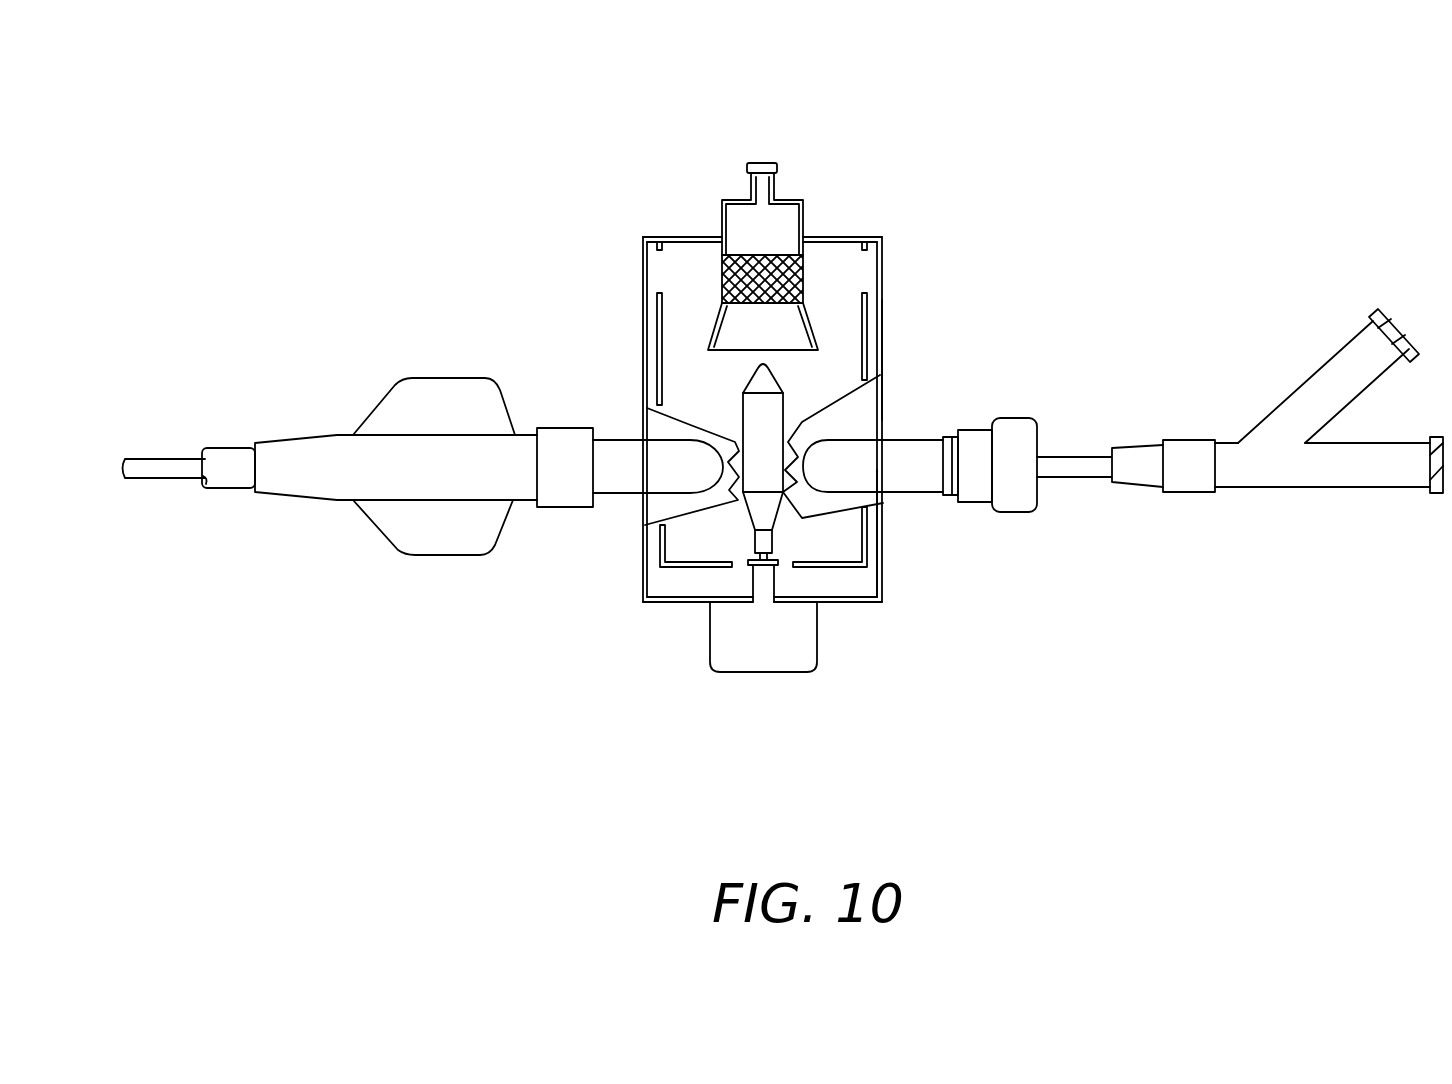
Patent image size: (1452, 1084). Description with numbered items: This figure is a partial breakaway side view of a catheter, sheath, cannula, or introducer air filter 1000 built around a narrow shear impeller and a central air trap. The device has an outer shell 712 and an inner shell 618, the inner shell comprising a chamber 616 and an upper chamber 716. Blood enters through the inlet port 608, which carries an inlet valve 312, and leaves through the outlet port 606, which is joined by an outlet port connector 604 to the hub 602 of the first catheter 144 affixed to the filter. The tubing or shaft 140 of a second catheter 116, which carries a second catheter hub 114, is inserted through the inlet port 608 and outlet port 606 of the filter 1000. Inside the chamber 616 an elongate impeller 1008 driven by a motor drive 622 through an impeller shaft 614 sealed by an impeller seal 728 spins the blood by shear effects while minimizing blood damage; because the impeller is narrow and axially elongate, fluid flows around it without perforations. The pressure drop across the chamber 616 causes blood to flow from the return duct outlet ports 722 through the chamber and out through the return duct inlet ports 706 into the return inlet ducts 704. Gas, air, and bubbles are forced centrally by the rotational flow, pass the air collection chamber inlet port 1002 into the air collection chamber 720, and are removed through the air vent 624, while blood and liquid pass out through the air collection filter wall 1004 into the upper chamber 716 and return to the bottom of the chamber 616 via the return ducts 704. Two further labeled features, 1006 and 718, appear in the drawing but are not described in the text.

The air filter 1000 is at (489, 214).
The air collection chamber inlet port 1002 is at (765, 335).
The air collection filter wall 1004 is at (743, 272).
The interior chamber 1006 is at (838, 347).
The elongate impeller 1008 is at (765, 503).
The return duct inlet ports 706 is at (663, 270).
The return inlet ducts 704 is at (650, 328).
The upper chamber 716 is at (827, 293).
The housing side wall 718 is at (882, 360).
The outer shell 712 is at (868, 428).
The chamber 616 is at (695, 402).
The air collection chamber 720 is at (778, 233).
The air vent 624 is at (762, 167).
The outlet port 606 is at (655, 473).
The inlet port 608 is at (905, 470).
The impeller shaft 614 is at (763, 557).
The impeller seal 728 is at (763, 592).
The motor drive 622 is at (782, 645).
The return duct outlet ports 722 is at (797, 568).
The inner shell 618 is at (867, 540).
The hub 602 is at (442, 448).
The outlet port connector 604 is at (580, 462).
The first catheter 144 is at (236, 473).
The tubing or shaft 140 is at (163, 470).
The inlet valve 312 is at (1035, 423).
The second catheter 116 is at (1067, 465).
The second catheter hub 114 is at (1333, 385).